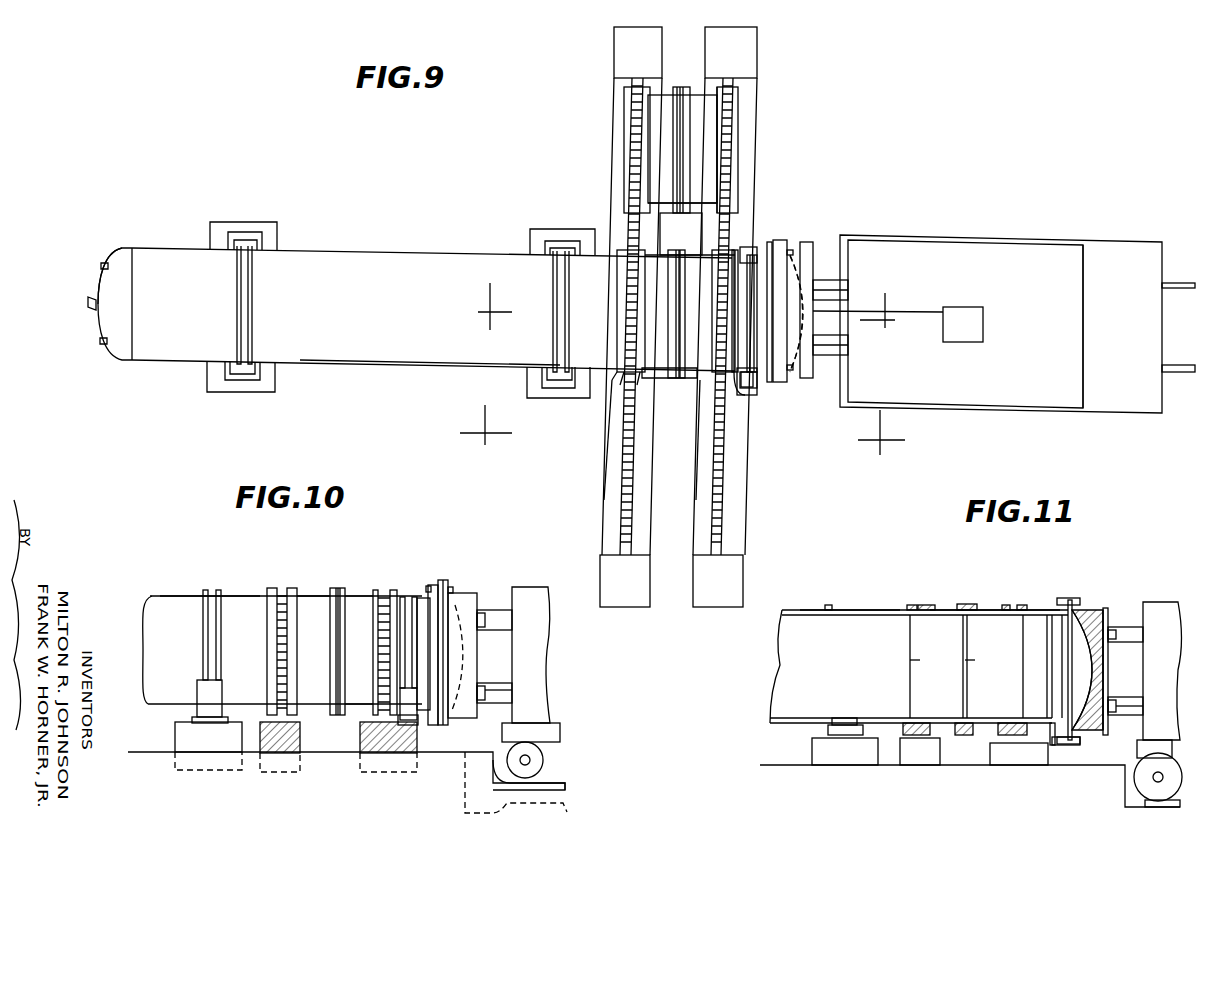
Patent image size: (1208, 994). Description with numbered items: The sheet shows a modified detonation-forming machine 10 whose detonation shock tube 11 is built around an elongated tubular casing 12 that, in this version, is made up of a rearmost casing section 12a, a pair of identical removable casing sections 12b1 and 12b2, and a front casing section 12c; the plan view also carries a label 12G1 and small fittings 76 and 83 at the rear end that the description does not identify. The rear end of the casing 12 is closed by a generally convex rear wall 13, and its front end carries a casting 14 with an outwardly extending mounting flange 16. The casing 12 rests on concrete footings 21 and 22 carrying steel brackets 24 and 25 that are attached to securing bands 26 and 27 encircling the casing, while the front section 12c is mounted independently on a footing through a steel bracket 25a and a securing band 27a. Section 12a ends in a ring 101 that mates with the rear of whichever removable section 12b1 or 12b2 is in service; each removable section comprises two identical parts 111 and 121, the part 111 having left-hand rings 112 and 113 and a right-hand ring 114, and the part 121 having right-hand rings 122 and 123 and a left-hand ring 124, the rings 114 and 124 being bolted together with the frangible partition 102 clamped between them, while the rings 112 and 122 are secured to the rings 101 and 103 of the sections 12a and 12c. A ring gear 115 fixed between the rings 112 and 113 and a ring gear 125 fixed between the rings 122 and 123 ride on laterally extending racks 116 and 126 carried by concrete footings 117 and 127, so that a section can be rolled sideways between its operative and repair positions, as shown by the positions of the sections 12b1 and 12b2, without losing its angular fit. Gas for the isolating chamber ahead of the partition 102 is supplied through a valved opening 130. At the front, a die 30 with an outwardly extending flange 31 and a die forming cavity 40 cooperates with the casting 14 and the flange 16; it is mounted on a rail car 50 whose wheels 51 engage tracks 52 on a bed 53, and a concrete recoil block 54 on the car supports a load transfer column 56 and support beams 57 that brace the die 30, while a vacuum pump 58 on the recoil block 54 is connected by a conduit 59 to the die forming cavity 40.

In FIG. 9, the tubular casing 12 is at (346, 270).
In FIG. 10, the tubular casing 12 is at (170, 615).
In FIG. 11, the tubular casing 12 is at (813, 608).
In FIG. 9, the rearmost casing section 12a is at (370, 355).
In FIG. 10, the rearmost casing section 12a is at (240, 608).
In FIG. 11, the rearmost casing section 12a is at (877, 608).
In FIG. 10, the removable casing section 12b1 is at (336, 583).
In FIG. 11, the removable casing section 12b1 is at (973, 600).
In FIG. 9, the removable casing section 12b2 is at (660, 117).
In FIG. 9, the front casing section 12c is at (784, 274).
In FIG. 9, the housing gap 12G1 is at (656, 278).
In FIG. 9, the rear wall 13 is at (127, 247).
In FIG. 9, the casting 14 is at (757, 388).
In FIG. 10, the casting 14 is at (430, 585).
In FIG. 9, the mounting flange 16 is at (770, 250).
In FIG. 10, the mounting flange 16 is at (442, 582).
In FIG. 11, the mounting flange 16 is at (1076, 598).
In FIG. 9, the concrete footing 21 is at (222, 222).
In FIG. 9, the concrete footing 22 is at (530, 240).
In FIG. 10, the concrete footing 22 is at (188, 742).
In FIG. 11, the concrete footing 22 is at (832, 757).
In FIG. 9, the steel bracket 24 is at (228, 378).
In FIG. 9, the steel bracket 25 is at (545, 380).
In FIG. 10, the steel bracket 25 is at (208, 697).
In FIG. 11, the steel bracket 25 is at (838, 730).
In FIG. 10, the steel bracket 25a is at (410, 720).
In FIG. 9, the securing band 26 is at (253, 290).
In FIG. 9, the securing band 27 is at (556, 292).
In FIG. 10, the securing band 27 is at (210, 625).
In FIG. 11, the securing band 27 is at (840, 608).
In FIG. 10, the securing band 27a is at (404, 597).
In FIG. 9, the die 30 is at (797, 263).
In FIG. 10, the die 30 is at (478, 592).
In FIG. 11, the die 30 is at (1109, 606).
In FIG. 9, the die flange 31 is at (775, 250).
In FIG. 10, the die flange 31 is at (448, 582).
In FIG. 11, the die flange 31 is at (1081, 599).
In FIG. 9, the die forming cavity 40 is at (812, 380).
In FIG. 11, the die forming cavity 40 is at (1090, 640).
In FIG. 9, the rail car 50 is at (1084, 236).
In FIG. 10, the rail car 50 is at (563, 732).
In FIG. 10, the wheels 51 is at (545, 760).
In FIG. 11, the wheels 51 is at (1151, 790).
In FIG. 9, the tracks 52 is at (1175, 362).
In FIG. 10, the tracks 52 is at (560, 787).
In FIG. 10, the bed 53 is at (570, 812).
In FIG. 9, the concrete recoil block 54 is at (1088, 262).
In FIG. 10, the concrete recoil block 54 is at (535, 705).
In FIG. 11, the concrete recoil block 54 is at (1163, 608).
In FIG. 9, the load transfer column 56 is at (838, 340).
In FIG. 10, the load transfer column 56 is at (495, 663).
In FIG. 11, the load transfer column 56 is at (1130, 667).
In FIG. 10, the support beams 57 is at (500, 696).
In FIG. 11, the support beams 57 is at (1128, 712).
In FIG. 9, the vacuum pump 58 is at (960, 304).
In FIG. 9, the conduit 59 is at (856, 312).
In FIG. 9, the fitting 76 is at (90, 306).
In FIG. 9, the fitting 83 is at (101, 345).
In FIG. 9, the ring 101 is at (622, 378).
In FIG. 11, the frangible partition 102 is at (963, 690).
In FIG. 9, the ring 103 is at (742, 390).
In FIG. 9, the casing section part 111 is at (648, 152).
In FIG. 10, the casing section part 111 is at (308, 605).
In FIG. 11, the casing section part 111 is at (928, 645).
In FIG. 9, the left-hand ring 112 is at (632, 385).
In FIG. 9, the left-hand ring 113 is at (640, 386).
In FIG. 9, the right-hand ring 114 is at (678, 90).
In FIG. 10, the right-hand ring 114 is at (331, 718).
In FIG. 11, the right-hand ring 114 is at (958, 604).
In FIG. 9, the ring gear 115 is at (632, 122).
In FIG. 10, the ring gear 115 is at (285, 597).
In FIG. 11, the ring gear 115 is at (923, 605).
In FIG. 9, the rack 116 is at (620, 507).
In FIG. 10, the rack 116 is at (265, 745).
In FIG. 11, the rack 116 is at (935, 740).
In FIG. 9, the concrete footing 117 is at (602, 555).
In FIG. 10, the concrete footing 117 is at (283, 752).
In FIG. 11, the concrete footing 117 is at (905, 757).
In FIG. 9, the casing section part 121 is at (738, 112).
In FIG. 10, the casing section part 121 is at (363, 600).
In FIG. 11, the casing section part 121 is at (988, 655).
In FIG. 9, the right-hand ring 122 is at (745, 255).
In FIG. 9, the right-hand ring 123 is at (714, 256).
In FIG. 9, the left-hand ring 124 is at (690, 90).
In FIG. 10, the left-hand ring 124 is at (342, 716).
In FIG. 11, the left-hand ring 124 is at (1005, 604).
In FIG. 9, the ring gear 125 is at (738, 125).
In FIG. 10, the ring gear 125 is at (383, 590).
In FIG. 11, the ring gear 125 is at (1021, 604).
In FIG. 9, the rack 126 is at (718, 505).
In FIG. 10, the rack 126 is at (372, 750).
In FIG. 11, the rack 126 is at (1000, 752).
In FIG. 9, the concrete footing 127 is at (745, 543).
In FIG. 10, the concrete footing 127 is at (395, 752).
In FIG. 11, the concrete footing 127 is at (1030, 767).
In FIG. 9, the opening 130 is at (802, 260).
In FIG. 11, the opening 130 is at (1068, 598).
In FIG. 9, the machine 10 is at (686, 432).
In FIG. 9, the detonation shock tube 11 is at (686, 317).